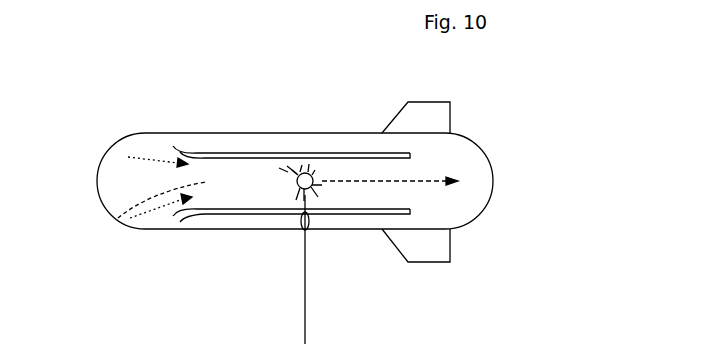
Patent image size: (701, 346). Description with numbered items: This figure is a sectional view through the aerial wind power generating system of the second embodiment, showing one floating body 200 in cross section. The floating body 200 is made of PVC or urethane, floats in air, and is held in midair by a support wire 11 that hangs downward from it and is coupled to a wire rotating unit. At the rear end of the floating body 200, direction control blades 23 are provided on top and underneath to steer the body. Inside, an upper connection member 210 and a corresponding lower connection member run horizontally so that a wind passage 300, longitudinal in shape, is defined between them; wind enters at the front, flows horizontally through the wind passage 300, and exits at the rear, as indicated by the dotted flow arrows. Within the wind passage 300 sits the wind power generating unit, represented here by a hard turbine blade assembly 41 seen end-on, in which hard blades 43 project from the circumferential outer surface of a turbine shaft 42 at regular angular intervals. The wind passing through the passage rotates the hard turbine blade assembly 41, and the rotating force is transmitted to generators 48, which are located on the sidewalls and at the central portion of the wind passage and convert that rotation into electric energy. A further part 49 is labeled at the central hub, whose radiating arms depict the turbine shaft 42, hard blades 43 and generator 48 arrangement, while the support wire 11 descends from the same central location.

The floating body 200 is at (181, 132).
The upper connection member 210 is at (235, 150).
The direction control blade 23 is at (400, 104).
The wind passage 300 is at (128, 222).
The hard turbine blade assembly 41 is at (327, 175).
The turbine shaft 42 is at (297, 195).
The hard blade 43 is at (313, 198).
The generator 48 is at (299, 170).
The hub / rotor 49 is at (311, 170).
The support wire 11 is at (306, 308).